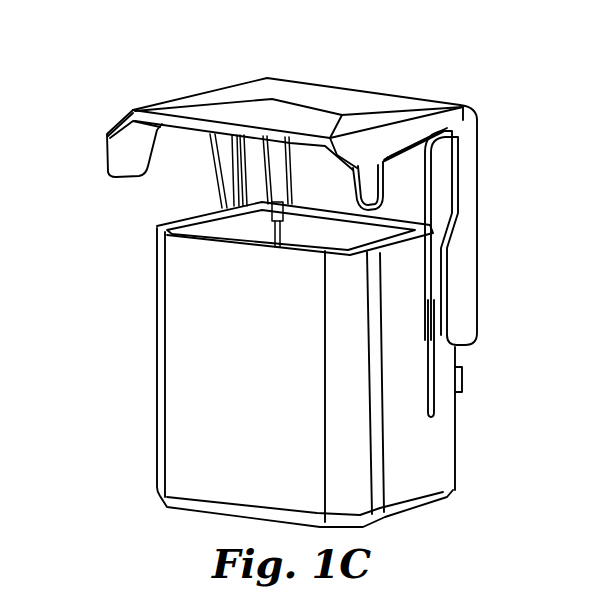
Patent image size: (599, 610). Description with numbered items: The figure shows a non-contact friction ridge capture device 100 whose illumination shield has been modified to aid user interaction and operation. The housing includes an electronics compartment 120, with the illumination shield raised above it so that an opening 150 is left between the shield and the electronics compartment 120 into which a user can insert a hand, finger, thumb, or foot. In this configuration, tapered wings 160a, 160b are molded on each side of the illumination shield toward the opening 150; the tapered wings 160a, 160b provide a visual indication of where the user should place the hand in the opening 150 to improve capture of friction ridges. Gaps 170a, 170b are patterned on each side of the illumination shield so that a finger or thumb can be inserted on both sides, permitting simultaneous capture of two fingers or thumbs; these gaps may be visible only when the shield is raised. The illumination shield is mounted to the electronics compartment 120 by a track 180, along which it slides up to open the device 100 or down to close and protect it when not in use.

The device 100 is at (204, 51).
The electronics compartment 120 is at (170, 420).
The opening 150 is at (157, 203).
The tapered wing 160a is at (122, 163).
The tapered wing 160b is at (380, 190).
The gap 170a is at (173, 155).
The gap 170b is at (413, 175).
The track 180 is at (433, 397).